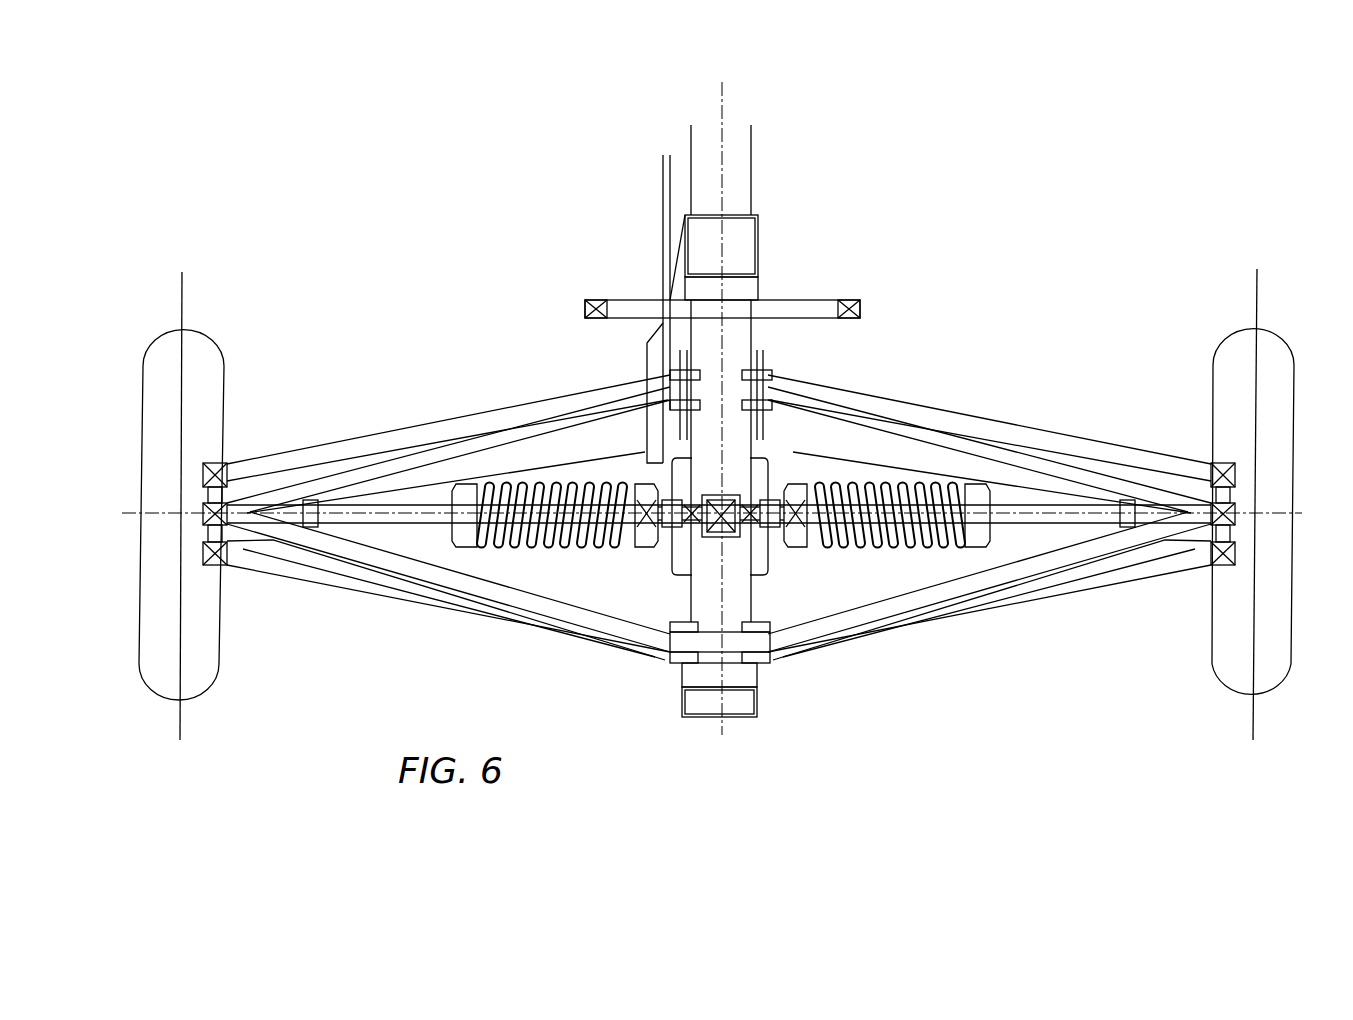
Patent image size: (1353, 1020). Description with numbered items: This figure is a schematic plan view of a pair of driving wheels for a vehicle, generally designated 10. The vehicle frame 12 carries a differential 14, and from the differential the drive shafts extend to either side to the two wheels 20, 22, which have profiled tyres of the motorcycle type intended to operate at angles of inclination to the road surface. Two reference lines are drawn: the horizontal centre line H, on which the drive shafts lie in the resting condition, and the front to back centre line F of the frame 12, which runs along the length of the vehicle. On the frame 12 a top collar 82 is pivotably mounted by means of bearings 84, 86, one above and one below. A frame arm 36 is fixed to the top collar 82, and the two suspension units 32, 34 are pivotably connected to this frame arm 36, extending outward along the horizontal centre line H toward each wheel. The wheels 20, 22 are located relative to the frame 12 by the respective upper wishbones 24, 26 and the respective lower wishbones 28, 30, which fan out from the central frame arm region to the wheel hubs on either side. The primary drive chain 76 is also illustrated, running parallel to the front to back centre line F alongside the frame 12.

The pair of driving wheels 10 is at (418, 124).
The vehicle frame 12 is at (738, 173).
The differential 14 is at (680, 553).
The wheel 20 is at (1272, 682).
The wheel 22 is at (163, 672).
The upper wishbone 24 is at (1034, 565).
The upper wishbone 26 is at (392, 565).
The lower wishbone 28 is at (1135, 573).
The lower wishbone 30 is at (303, 570).
The suspension unit 32 is at (892, 548).
The suspension unit 34 is at (565, 555).
The frame arm 36 is at (740, 494).
The primary drive chain 76 is at (660, 207).
The top collar 82 is at (702, 592).
The bearing 84 is at (750, 289).
The bearing 86 is at (748, 676).
The front to back centre line F is at (723, 90).
The horizontal centre line H is at (1300, 515).